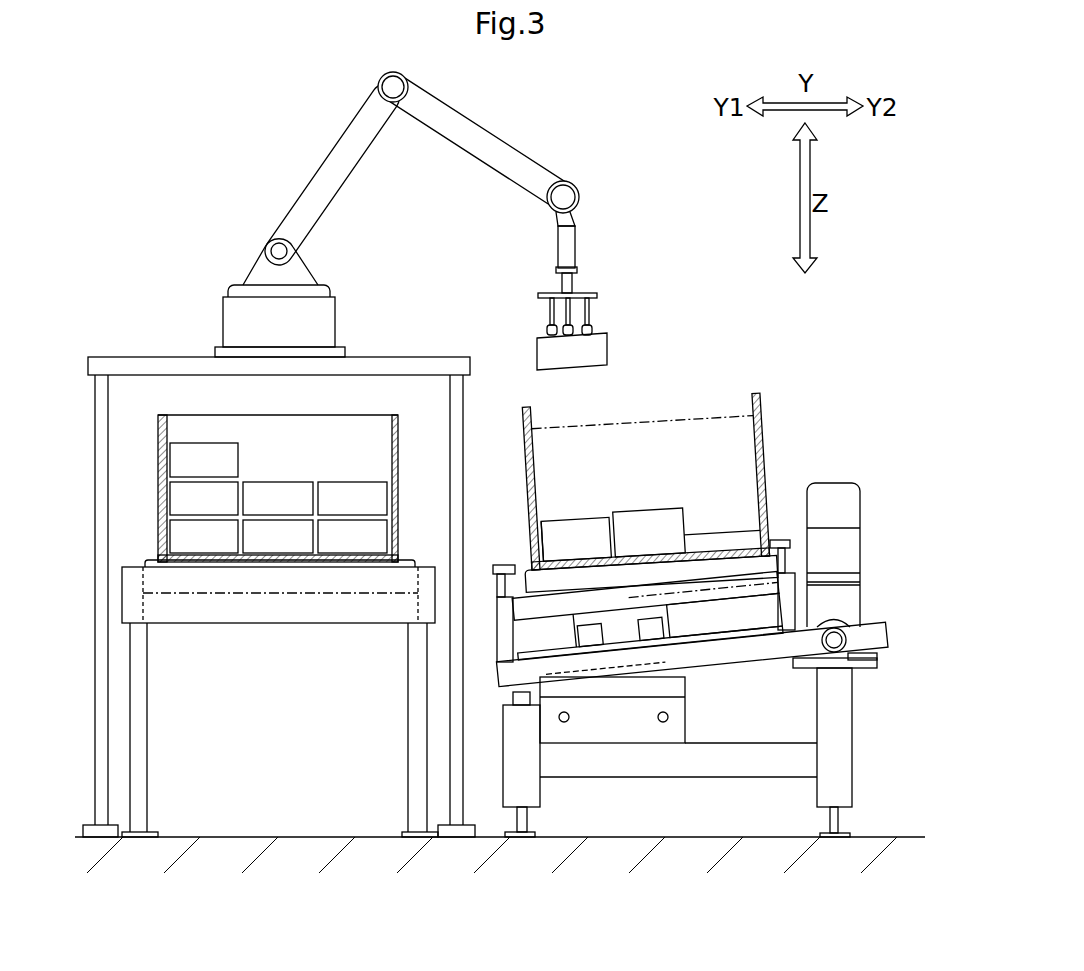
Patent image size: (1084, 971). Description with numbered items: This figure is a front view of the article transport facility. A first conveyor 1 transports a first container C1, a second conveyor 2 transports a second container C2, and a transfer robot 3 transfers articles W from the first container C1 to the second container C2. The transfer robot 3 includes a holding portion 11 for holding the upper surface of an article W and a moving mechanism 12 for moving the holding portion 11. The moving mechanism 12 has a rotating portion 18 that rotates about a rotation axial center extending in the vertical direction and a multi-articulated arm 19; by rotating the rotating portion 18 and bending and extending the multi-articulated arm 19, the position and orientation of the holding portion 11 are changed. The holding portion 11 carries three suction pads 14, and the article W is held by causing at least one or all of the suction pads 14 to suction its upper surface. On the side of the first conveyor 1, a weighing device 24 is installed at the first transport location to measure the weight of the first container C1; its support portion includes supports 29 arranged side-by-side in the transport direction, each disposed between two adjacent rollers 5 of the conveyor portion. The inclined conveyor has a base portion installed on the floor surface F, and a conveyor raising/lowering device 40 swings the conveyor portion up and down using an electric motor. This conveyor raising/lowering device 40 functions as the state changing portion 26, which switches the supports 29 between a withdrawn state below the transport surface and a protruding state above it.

The first conveyor 1 is at (708, 613).
The second conveyor 2 is at (228, 617).
The transfer robot 3 is at (444, 214).
The rollers 5 is at (400, 560).
The holding portion 11 is at (560, 295).
The moving mechanism 12 is at (588, 192).
The suction pads 14 is at (552, 336).
The rotating portion 18 is at (318, 288).
The multi-articulated arm 19 is at (330, 170).
The weighing device 24 is at (695, 703).
The state changing portion 26 is at (832, 494).
The supports 29 is at (566, 568).
The conveyor raising/lowering device 40 is at (840, 508).
The first container C1 is at (761, 410).
The second container C2 is at (158, 454).
The articles W is at (532, 354).
The floor surface F is at (276, 837).